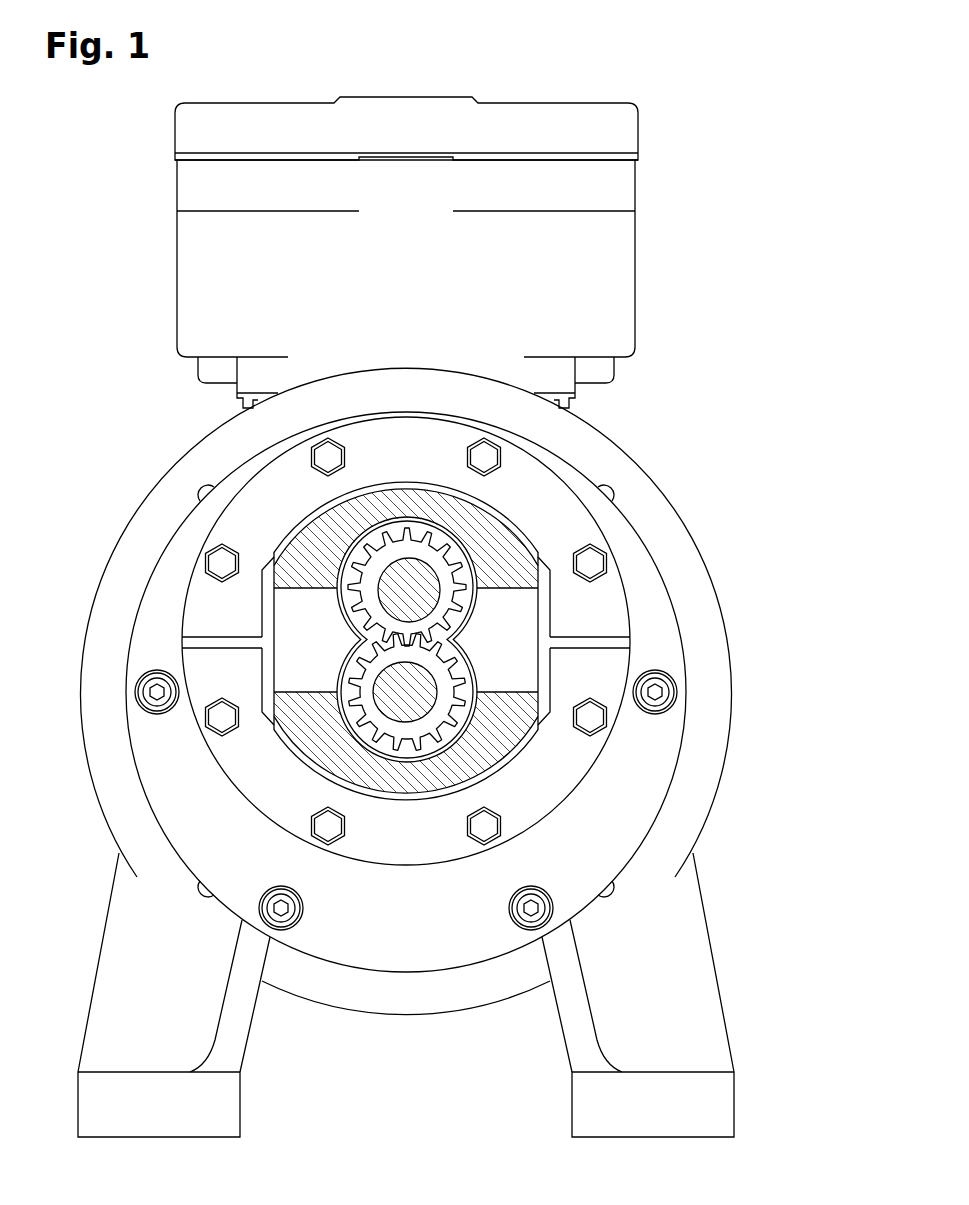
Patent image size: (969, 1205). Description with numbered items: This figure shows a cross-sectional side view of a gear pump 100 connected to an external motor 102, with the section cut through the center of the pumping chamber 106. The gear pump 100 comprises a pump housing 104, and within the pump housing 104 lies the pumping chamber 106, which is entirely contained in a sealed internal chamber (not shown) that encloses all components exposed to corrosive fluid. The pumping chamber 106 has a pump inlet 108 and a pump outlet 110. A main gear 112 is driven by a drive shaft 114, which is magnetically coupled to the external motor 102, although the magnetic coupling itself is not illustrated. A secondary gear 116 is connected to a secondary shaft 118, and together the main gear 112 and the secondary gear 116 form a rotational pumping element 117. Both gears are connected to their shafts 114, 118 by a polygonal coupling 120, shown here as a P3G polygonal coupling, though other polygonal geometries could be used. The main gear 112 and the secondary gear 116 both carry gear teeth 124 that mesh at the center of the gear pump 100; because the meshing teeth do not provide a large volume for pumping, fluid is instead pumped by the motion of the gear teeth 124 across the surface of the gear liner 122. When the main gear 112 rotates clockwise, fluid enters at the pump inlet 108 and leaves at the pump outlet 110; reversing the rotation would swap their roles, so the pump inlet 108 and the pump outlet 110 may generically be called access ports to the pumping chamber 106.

The gear pump 100 is at (714, 468).
The external motor 102 is at (210, 422).
The pump housing 104 is at (293, 575).
The pumping chamber 106 is at (350, 637).
The pump inlet 108 is at (545, 671).
The pump outlet 110 is at (264, 671).
The main gear 112 is at (428, 707).
The drive shaft 114 is at (508, 760).
The secondary gear 116 is at (427, 585).
The rotational pumping element 117 is at (310, 690).
The secondary shaft 118 is at (445, 530).
The polygonal coupling 120 is at (300, 563).
The gear liner 122 is at (418, 536).
The gear teeth 124 is at (372, 568).